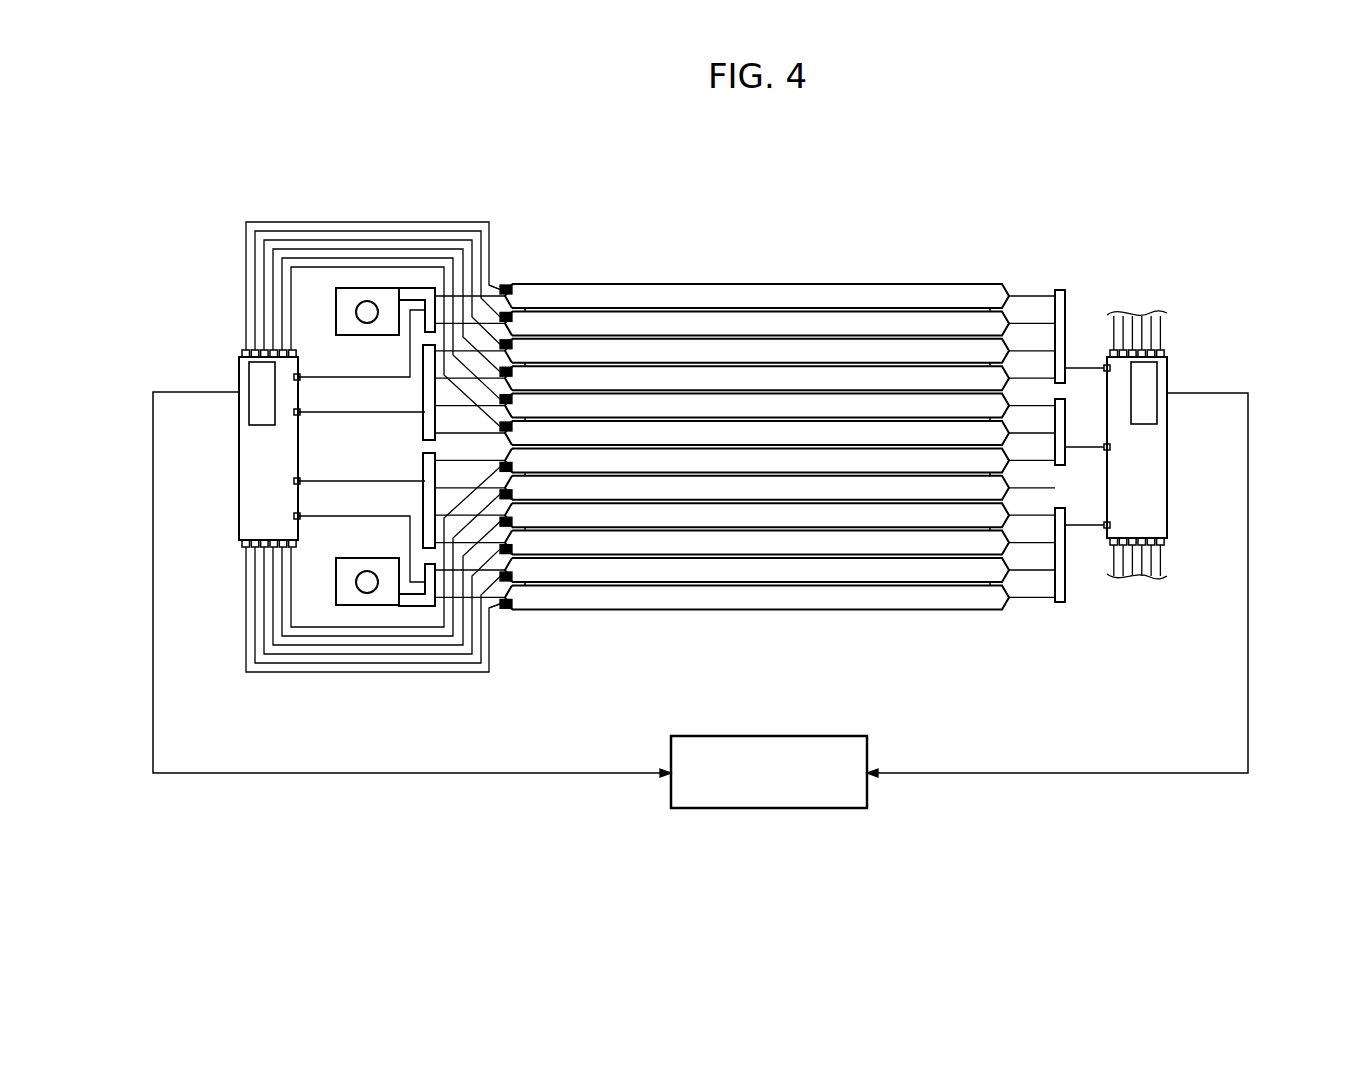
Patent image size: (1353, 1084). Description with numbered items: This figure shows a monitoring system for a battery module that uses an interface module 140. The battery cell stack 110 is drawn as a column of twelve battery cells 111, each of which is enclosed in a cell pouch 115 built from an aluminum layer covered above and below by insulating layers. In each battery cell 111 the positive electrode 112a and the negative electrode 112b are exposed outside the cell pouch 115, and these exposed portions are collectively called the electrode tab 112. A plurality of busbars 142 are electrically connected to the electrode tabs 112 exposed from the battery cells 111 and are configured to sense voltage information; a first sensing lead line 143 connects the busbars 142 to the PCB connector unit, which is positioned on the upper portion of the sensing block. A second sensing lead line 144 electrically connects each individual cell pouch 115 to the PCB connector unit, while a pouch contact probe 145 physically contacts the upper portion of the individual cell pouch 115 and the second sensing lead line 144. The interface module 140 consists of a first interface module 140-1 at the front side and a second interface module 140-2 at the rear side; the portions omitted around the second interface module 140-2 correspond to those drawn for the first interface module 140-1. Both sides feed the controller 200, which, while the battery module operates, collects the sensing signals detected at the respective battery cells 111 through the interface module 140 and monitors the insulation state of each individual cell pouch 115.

The battery cell stack 110 is at (783, 280).
The battery cell 111 is at (936, 405).
The electrode tab 112 is at (605, 229).
The positive electrode 112a is at (556, 295).
The negative electrode 112b is at (492, 292).
The cell pouch 115 is at (532, 611).
The interface module 140 is at (1165, 712).
The first interface module 140-1 is at (239, 447).
The second interface module 140-2 is at (1167, 447).
The busbar 142 is at (428, 288).
The first sensing lead line 143 is at (351, 378).
The second sensing lead line 144 is at (373, 222).
The pouch contact probe 145 is at (505, 611).
The controller 200 is at (767, 736).